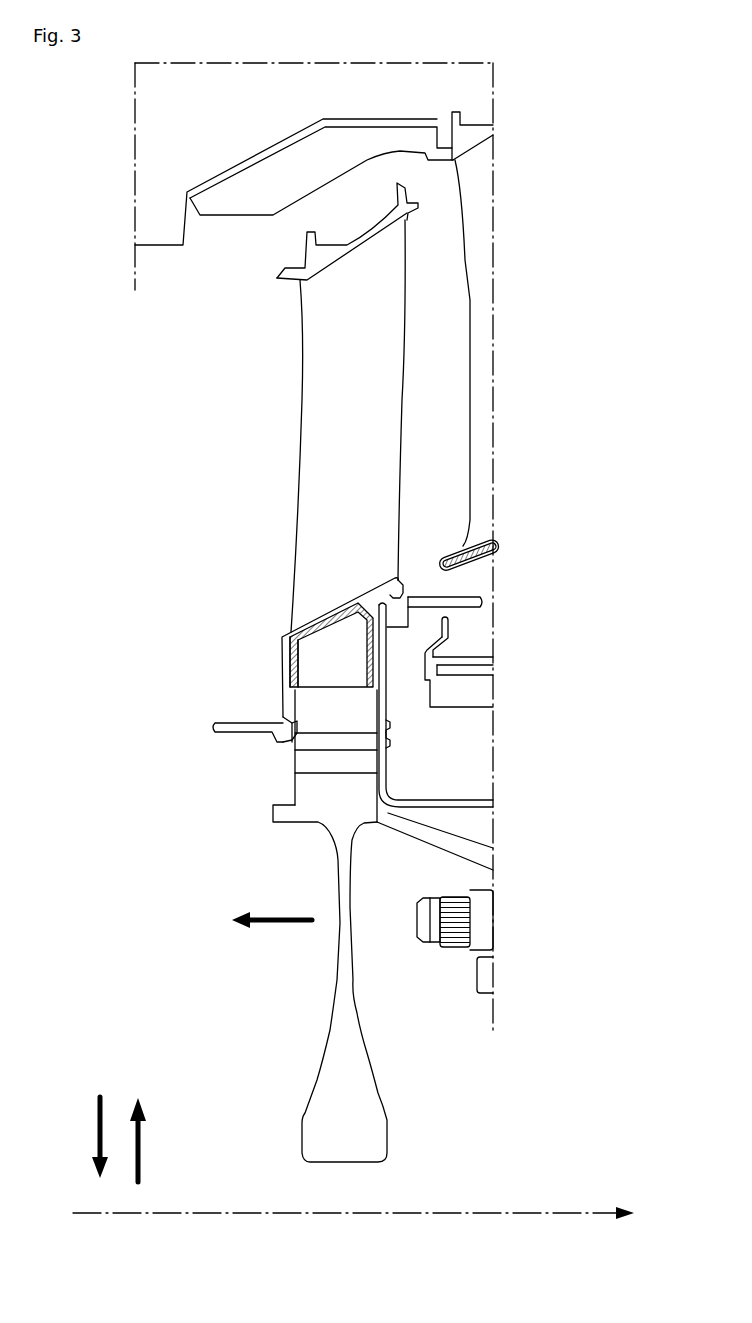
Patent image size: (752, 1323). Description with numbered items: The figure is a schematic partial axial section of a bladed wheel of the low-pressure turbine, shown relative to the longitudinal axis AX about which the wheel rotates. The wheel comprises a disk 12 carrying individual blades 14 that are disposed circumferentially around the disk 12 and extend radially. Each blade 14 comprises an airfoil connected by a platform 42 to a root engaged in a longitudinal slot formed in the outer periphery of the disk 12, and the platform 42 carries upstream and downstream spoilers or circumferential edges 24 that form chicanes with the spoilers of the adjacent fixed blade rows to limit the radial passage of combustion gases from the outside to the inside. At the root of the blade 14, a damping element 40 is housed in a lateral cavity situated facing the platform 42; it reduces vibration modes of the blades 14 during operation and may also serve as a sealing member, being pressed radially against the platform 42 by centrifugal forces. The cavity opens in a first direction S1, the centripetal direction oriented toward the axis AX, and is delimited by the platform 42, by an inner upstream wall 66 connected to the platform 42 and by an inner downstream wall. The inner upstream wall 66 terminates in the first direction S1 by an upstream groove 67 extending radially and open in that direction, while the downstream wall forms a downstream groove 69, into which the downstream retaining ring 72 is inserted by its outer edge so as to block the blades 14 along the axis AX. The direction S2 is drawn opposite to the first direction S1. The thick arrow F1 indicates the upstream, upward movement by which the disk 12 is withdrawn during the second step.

The disk 12 is at (347, 812).
The blade 14 is at (366, 444).
The circumferential edge 24 is at (230, 723).
The damping element 40 is at (297, 645).
The platform 42 is at (331, 603).
The inner upstream wall 66 is at (290, 670).
The upstream groove 67 is at (300, 727).
The downstream groove 69 is at (401, 595).
The retaining ring 72 is at (383, 686).
The arrow F1 is at (272, 929).
The first direction S1 is at (97, 1130).
The second direction S2 is at (142, 1148).
The longitudinal axis AX is at (552, 1212).